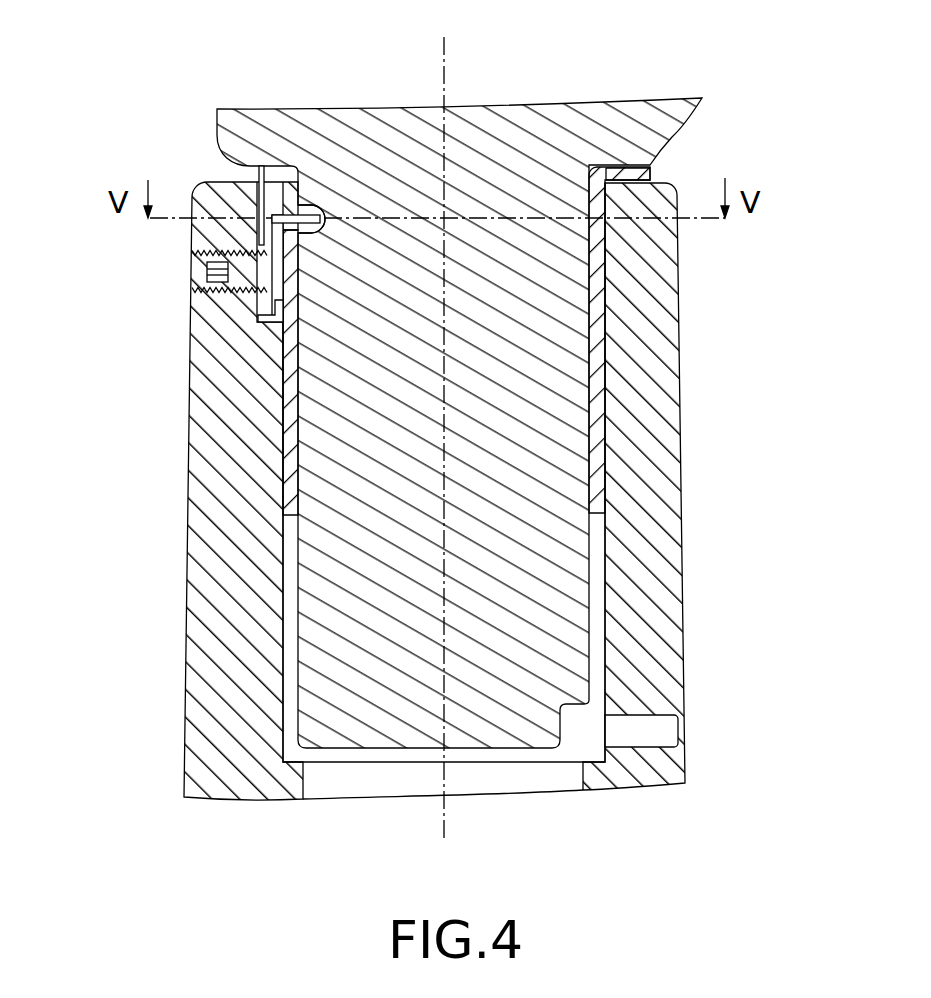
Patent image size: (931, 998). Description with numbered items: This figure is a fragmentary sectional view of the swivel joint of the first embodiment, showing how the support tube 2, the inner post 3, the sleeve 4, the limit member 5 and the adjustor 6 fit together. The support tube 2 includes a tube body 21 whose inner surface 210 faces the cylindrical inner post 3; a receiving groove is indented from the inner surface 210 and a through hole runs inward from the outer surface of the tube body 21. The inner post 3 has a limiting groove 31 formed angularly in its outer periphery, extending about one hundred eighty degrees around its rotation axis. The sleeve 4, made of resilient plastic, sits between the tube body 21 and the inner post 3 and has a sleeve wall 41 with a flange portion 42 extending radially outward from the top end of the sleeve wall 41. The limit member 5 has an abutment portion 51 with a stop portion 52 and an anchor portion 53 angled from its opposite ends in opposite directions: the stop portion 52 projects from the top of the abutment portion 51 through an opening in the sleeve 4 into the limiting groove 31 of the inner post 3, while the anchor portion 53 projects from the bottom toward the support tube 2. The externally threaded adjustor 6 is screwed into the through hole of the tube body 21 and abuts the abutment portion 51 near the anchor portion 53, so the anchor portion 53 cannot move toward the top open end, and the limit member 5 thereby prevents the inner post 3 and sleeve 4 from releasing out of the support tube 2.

The support tube 2 is at (444, 491).
The tube body 21 is at (661, 541).
The inner surface 210 is at (285, 550).
The inner post 3 is at (551, 127).
The limiting groove 31 is at (330, 217).
The sleeve 4 is at (532, 323).
The sleeve wall 41 is at (598, 415).
The flange portion 42 is at (650, 170).
The limit member 5 is at (200, 310).
The abutment portion 51 is at (282, 232).
The stop portion 52 is at (278, 212).
The anchor portion 53 is at (265, 298).
The adjustor 6 is at (268, 283).